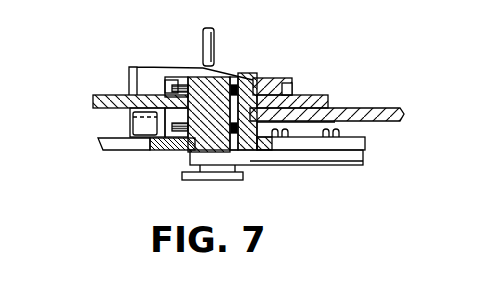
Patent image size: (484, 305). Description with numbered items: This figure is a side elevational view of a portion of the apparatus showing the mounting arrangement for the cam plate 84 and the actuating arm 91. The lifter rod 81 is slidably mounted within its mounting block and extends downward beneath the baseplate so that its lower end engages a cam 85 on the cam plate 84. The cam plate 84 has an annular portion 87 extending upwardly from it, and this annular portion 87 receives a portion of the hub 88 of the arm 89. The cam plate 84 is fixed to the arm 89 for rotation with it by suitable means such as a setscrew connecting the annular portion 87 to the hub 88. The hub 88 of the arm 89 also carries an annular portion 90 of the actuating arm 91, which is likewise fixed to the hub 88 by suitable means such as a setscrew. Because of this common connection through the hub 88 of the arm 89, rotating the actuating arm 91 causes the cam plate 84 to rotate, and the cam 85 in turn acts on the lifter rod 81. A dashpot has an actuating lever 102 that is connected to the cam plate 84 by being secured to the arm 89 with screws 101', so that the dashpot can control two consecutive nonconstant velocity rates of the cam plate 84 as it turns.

The lifter rod 81 is at (205, 45).
The cam plate 84 is at (93, 93).
The cam 85 is at (268, 83).
The annular portion 87 is at (175, 80).
The hub 88 is at (229, 80).
The arm 89 is at (122, 153).
The annular portion 90 is at (165, 145).
The actuating arm 91 is at (393, 104).
The screws 101' is at (345, 136).
The actuating lever 102 is at (333, 163).